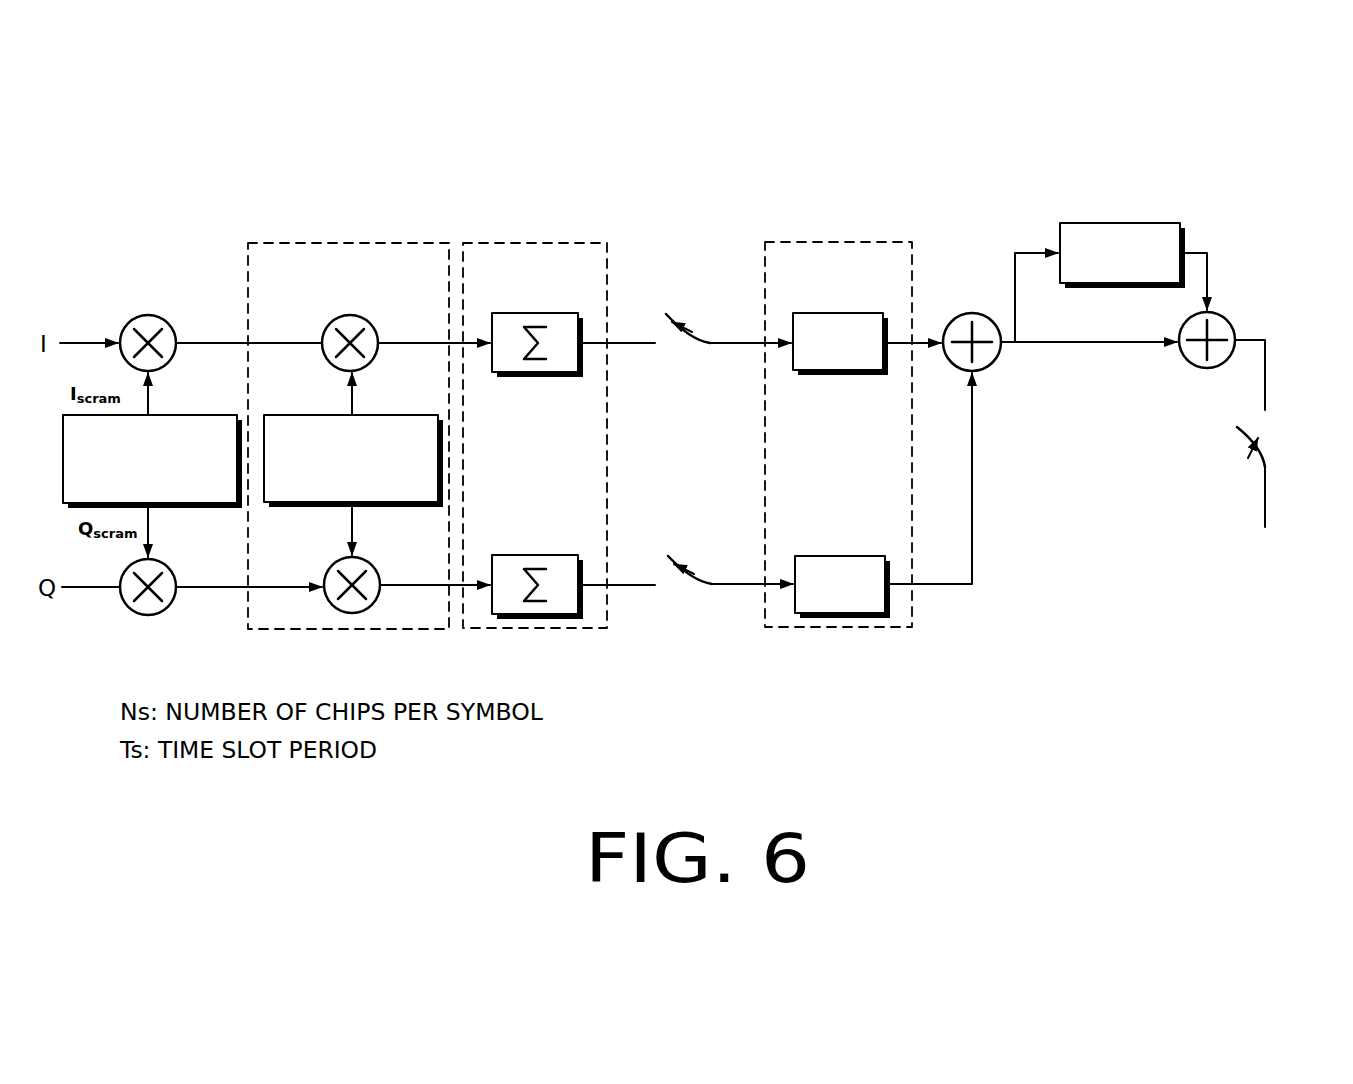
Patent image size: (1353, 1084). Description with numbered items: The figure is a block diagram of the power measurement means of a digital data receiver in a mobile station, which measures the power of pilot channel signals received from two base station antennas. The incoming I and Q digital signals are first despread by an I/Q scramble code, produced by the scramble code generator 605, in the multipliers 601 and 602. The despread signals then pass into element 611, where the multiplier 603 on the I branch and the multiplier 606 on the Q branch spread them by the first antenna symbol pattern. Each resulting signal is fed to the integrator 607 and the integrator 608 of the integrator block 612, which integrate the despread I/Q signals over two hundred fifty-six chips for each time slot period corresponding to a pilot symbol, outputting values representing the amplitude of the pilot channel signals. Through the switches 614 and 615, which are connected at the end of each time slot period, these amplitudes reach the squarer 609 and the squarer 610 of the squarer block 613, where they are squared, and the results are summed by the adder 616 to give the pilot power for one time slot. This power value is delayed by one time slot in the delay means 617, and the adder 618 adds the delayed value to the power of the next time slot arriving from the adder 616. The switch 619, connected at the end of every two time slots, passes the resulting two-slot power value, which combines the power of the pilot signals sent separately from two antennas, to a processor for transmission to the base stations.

The multiplier 601 is at (170, 322).
The multiplier 602 is at (170, 565).
The multiplier 603 is at (372, 321).
The scramble code generator 605 is at (203, 414).
The first antenna symbol generator 606 is at (374, 564).
The integrator 607 is at (534, 313).
The integrator 608 is at (537, 555).
The squarer 609 is at (838, 313).
The squarer 610 is at (840, 556).
The first antenna symbol pattern spreading element 611 is at (363, 242).
The integrator block 612 is at (533, 242).
The squarer block 613 is at (837, 242).
The switch 614 is at (706, 330).
The switch 615 is at (708, 572).
The adder 616 is at (951, 322).
The delay means 617 is at (1118, 223).
The adder 618 is at (1228, 318).
The switch 619 is at (1278, 443).